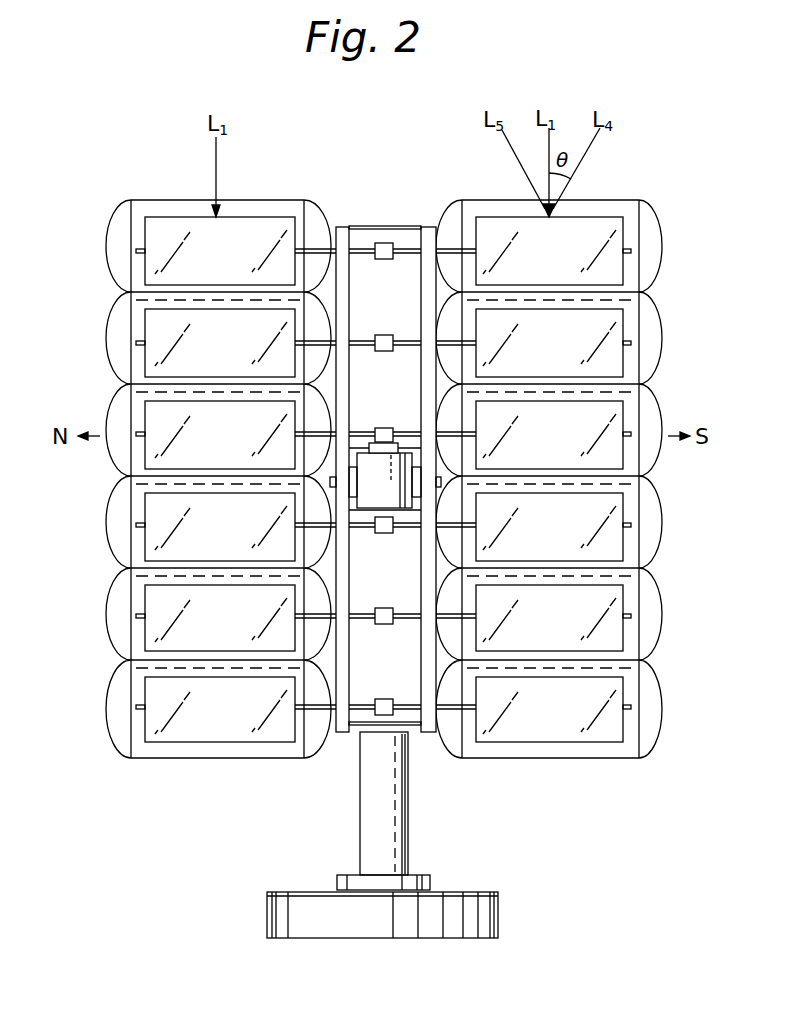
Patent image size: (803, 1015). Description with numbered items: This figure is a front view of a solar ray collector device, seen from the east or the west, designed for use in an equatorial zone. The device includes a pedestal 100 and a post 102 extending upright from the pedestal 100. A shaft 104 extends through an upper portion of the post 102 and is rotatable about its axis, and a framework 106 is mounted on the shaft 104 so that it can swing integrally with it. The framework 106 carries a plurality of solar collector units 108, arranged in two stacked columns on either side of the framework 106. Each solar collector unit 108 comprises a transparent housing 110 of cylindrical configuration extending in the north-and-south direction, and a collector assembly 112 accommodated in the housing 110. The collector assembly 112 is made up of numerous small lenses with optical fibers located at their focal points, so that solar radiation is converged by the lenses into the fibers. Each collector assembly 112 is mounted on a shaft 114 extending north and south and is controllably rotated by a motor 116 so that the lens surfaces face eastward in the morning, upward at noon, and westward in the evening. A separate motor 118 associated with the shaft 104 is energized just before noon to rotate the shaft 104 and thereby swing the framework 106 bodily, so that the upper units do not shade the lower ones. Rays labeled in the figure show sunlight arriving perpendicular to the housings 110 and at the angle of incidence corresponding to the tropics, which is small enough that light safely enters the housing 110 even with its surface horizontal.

The pedestal 100 is at (496, 918).
The post 102 is at (403, 843).
The shaft 104 is at (410, 452).
The framework 106 is at (337, 225).
The solar collector unit 108 is at (169, 201).
The transparent housing 110 is at (660, 233).
The collector assembly 112 is at (614, 263).
The shaft 114 is at (407, 245).
The motor 116 is at (385, 259).
The motor 118 is at (378, 455).